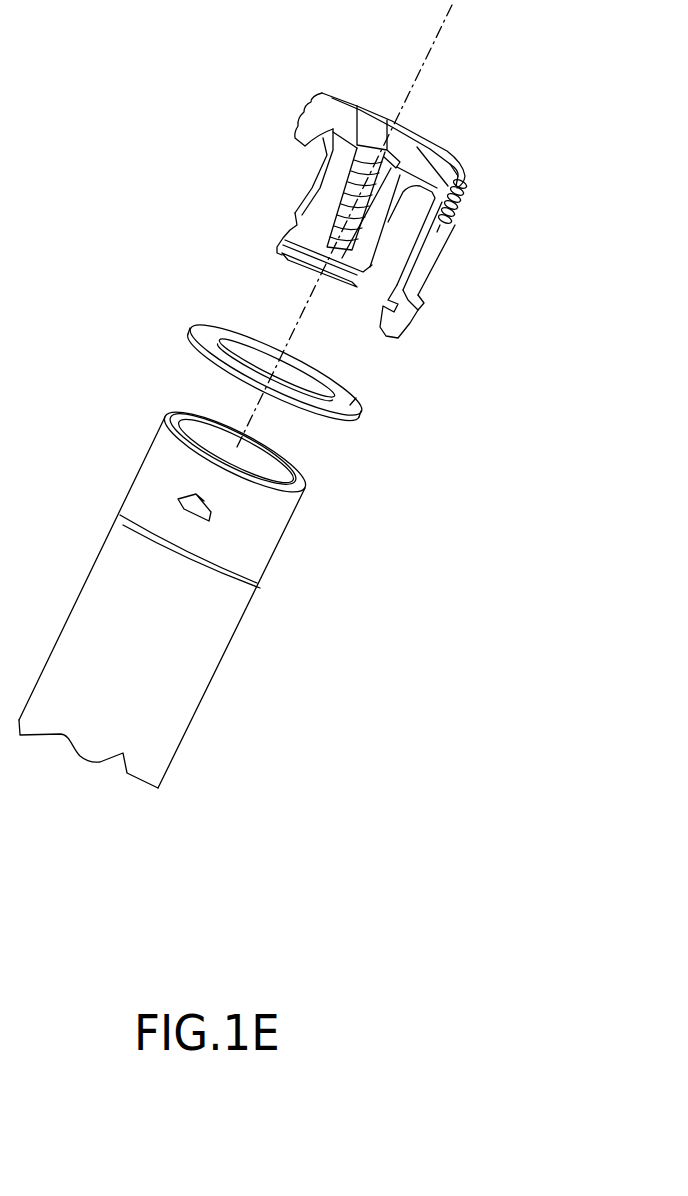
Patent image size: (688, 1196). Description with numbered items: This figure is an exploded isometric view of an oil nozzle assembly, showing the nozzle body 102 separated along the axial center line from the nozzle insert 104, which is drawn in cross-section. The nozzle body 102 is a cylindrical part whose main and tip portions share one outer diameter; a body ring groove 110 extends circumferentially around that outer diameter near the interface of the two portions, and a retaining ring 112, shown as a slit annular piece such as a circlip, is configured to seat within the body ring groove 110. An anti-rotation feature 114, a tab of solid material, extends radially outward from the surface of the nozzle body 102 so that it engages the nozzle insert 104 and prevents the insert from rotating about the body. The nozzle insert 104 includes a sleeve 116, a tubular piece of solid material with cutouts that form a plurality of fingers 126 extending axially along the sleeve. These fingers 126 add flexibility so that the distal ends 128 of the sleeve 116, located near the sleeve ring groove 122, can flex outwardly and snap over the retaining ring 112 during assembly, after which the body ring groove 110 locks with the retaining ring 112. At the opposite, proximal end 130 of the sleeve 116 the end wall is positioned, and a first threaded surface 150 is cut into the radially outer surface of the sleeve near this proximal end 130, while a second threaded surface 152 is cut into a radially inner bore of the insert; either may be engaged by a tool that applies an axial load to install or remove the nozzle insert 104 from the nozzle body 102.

The nozzle body 102 is at (220, 633).
The nozzle insert 104 is at (442, 152).
The body ring groove 110 is at (247, 582).
The retaining ring 112 is at (207, 332).
The anti-rotation feature 114 is at (210, 503).
The sleeve 116 is at (427, 263).
The sleeve ring groove 122 is at (289, 237).
The fingers 126 is at (443, 223).
The distal ends 128 is at (413, 317).
The proximal end 130 is at (453, 158).
The first threaded surface 150 is at (466, 190).
The second threaded surface 152 is at (387, 143).